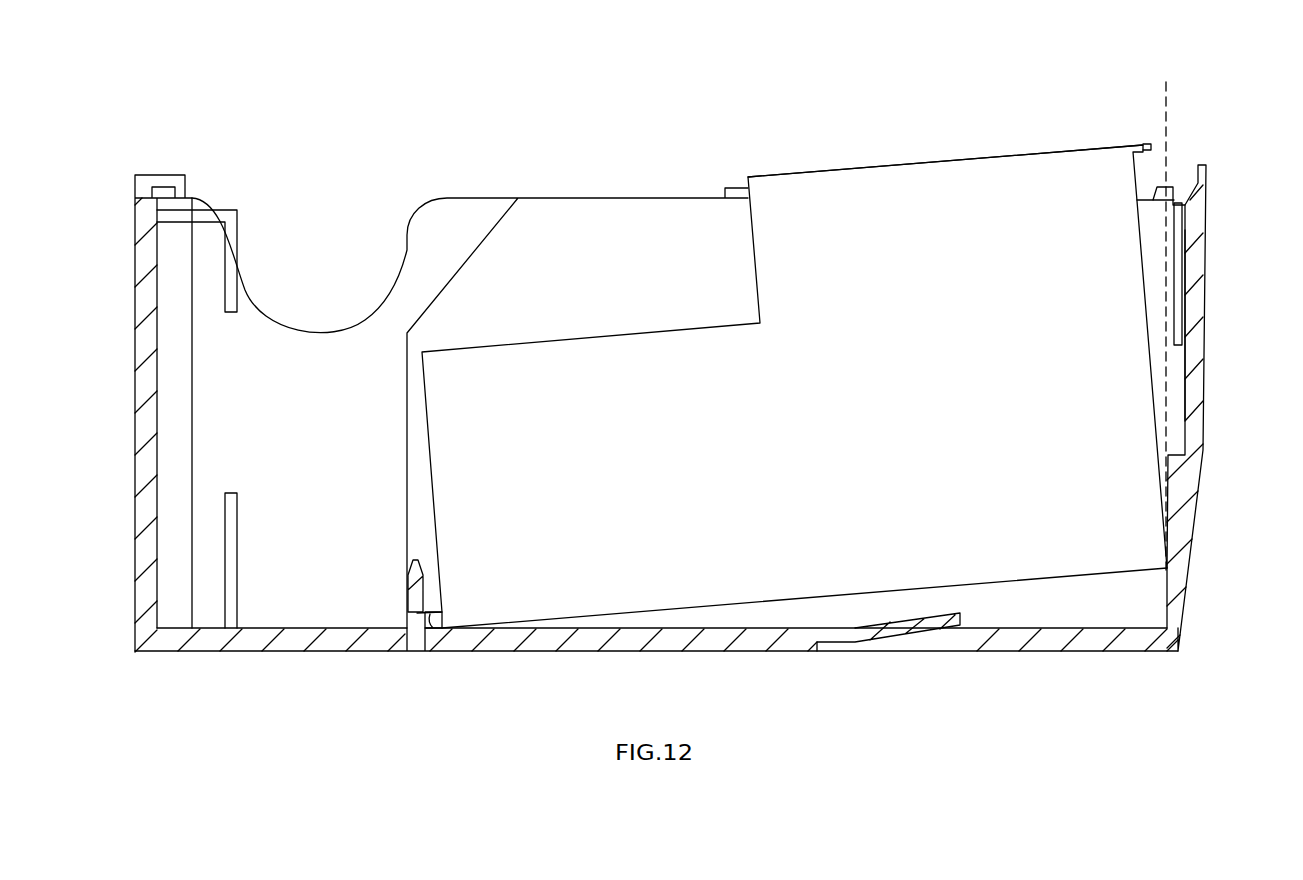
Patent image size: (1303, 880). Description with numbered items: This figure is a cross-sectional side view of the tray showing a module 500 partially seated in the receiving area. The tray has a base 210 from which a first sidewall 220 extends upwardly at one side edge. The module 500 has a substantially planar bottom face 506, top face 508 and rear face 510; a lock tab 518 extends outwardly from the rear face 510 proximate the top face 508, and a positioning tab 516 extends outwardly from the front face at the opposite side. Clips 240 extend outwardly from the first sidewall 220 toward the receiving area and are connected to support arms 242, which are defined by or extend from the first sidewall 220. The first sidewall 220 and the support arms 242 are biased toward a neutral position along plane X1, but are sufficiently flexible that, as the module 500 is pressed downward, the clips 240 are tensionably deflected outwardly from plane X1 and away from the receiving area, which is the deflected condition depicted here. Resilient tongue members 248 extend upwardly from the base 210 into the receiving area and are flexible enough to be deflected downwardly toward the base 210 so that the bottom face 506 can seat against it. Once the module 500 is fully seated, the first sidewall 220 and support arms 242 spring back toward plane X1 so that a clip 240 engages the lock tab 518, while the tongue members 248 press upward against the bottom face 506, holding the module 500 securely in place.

The base 210 is at (703, 633).
The first sidewall 220 is at (1173, 520).
The clip 240 is at (1183, 188).
The support arm 242 is at (1195, 302).
The resilient tongue member 248 is at (915, 627).
The module 500 is at (806, 193).
The bottom face 506 is at (1032, 582).
The top face 508 is at (898, 163).
The rear face 510 is at (1140, 213).
The positioning tab 516 is at (433, 622).
The lock tab 518 is at (1143, 147).
The plane X1 is at (1166, 102).